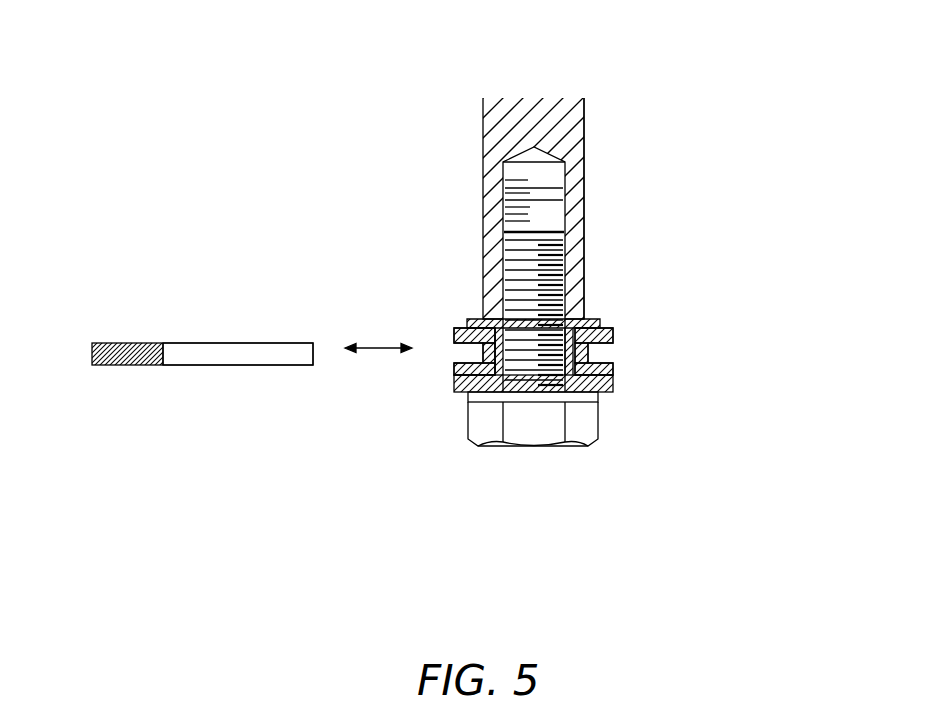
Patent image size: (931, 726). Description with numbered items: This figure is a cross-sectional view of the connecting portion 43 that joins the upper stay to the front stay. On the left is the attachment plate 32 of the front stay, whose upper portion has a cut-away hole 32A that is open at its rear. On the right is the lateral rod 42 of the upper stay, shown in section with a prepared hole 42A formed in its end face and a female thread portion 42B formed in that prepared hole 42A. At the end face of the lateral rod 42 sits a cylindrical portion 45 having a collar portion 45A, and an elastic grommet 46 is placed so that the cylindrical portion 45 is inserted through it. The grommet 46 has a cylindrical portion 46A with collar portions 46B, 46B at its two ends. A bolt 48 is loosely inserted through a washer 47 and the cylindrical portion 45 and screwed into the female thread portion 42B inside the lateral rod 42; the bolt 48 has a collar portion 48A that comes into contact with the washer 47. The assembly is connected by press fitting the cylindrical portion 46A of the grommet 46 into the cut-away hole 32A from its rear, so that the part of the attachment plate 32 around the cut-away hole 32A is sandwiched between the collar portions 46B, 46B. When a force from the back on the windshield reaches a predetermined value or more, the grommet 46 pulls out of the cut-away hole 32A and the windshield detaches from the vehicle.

The attachment plate 32 is at (132, 342).
The cut-away hole 32A is at (230, 348).
The lateral rod 42 is at (584, 185).
The prepared hole 42A is at (584, 143).
The female thread portion 42B is at (512, 206).
The connecting portion 43 is at (623, 315).
The cylindrical portion 45 is at (578, 378).
The collar portion 45A is at (593, 316).
The elastic grommet 46 is at (613, 340).
The cylindrical portion of grommet 46A is at (483, 352).
The collar portion of grommet 46B is at (613, 332).
The washer 47 is at (472, 392).
The bolt 48 is at (532, 450).
The collar portion of bolt 48A is at (592, 400).